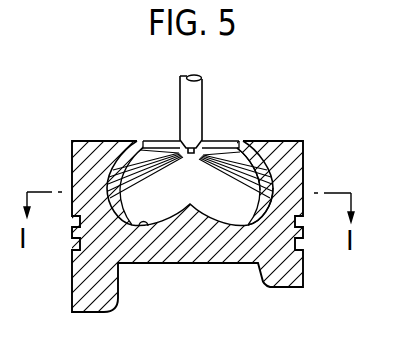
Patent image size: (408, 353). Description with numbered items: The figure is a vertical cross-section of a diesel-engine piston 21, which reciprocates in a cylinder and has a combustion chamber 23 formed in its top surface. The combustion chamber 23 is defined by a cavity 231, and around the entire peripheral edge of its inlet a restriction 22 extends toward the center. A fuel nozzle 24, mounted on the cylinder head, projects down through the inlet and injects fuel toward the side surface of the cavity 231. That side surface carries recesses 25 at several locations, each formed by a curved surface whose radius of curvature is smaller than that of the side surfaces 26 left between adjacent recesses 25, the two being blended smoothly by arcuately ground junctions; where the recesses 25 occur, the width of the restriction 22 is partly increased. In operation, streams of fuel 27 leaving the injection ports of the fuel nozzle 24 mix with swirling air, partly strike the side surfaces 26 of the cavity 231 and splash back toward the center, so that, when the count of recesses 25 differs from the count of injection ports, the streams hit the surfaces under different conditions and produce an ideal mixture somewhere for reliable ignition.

The piston 21 is at (305, 142).
The restriction 22 is at (148, 140).
The combustion chamber 23 is at (204, 199).
The cavity 231 is at (147, 228).
The fuel nozzle 24 is at (202, 91).
The recesses 25 is at (272, 185).
The side surfaces 26 is at (256, 152).
The streams of fuel 27 is at (222, 148).